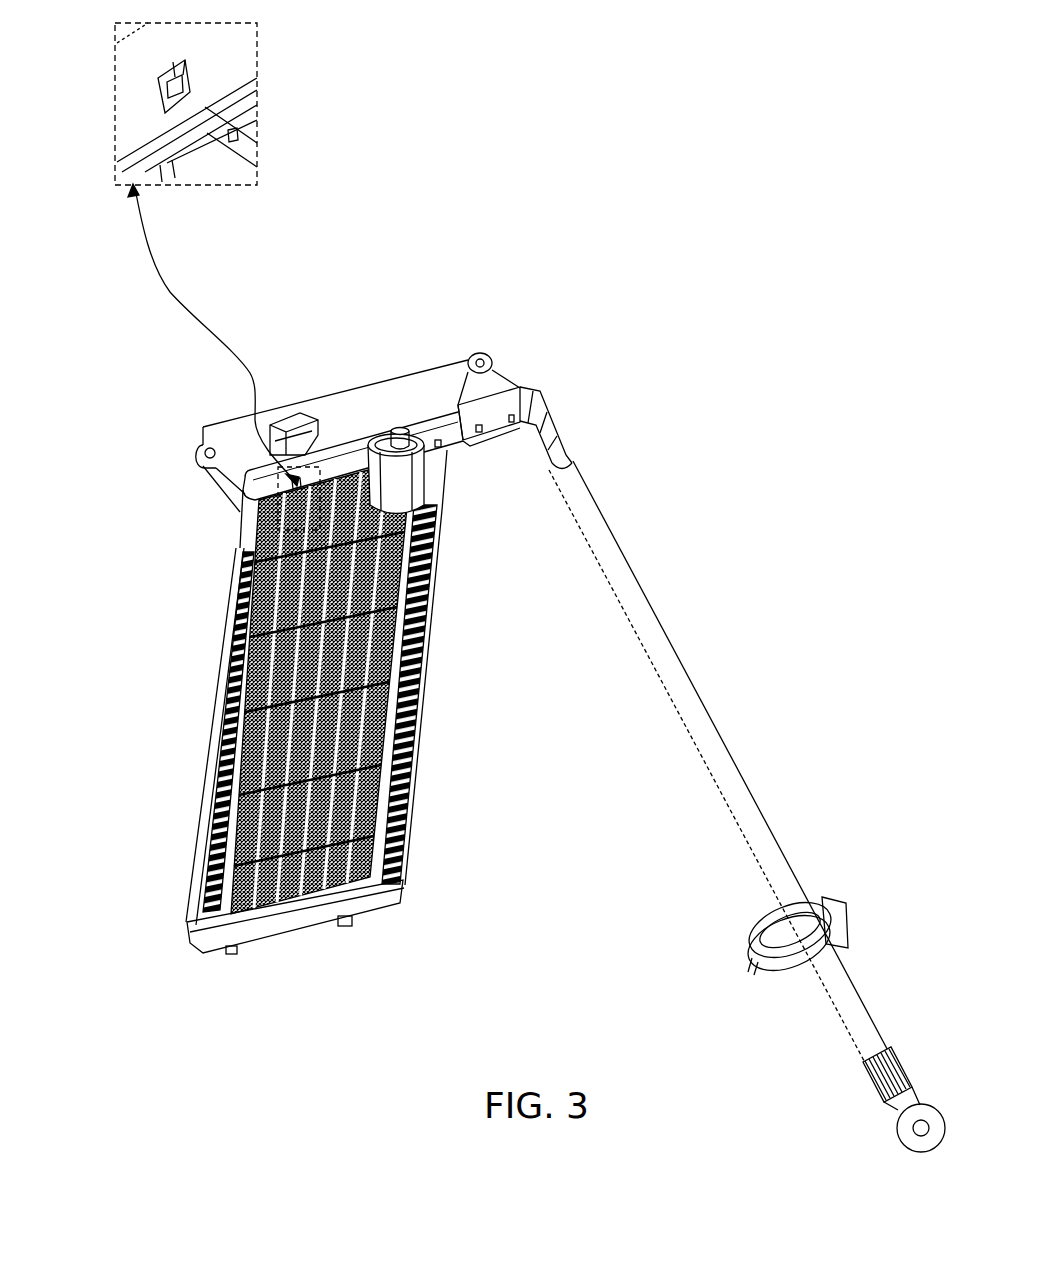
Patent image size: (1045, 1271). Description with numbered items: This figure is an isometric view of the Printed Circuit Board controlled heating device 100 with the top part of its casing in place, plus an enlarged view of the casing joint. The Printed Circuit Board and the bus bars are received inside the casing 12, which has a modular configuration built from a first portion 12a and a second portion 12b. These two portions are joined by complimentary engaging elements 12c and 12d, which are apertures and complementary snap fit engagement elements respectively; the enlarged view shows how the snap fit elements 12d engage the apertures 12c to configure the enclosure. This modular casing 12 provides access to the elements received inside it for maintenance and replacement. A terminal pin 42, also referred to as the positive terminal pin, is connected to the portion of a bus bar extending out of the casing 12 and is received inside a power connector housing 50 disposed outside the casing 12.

The Printed Circuit Board (PCB) controlled heating device 100 is at (707, 308).
The Printed Circuit Board (PCB) casing 12 is at (360, 397).
The first portion 12a is at (482, 383).
The second portion 12b is at (468, 446).
The complimentary engaging element 12c is at (295, 482).
The complimentary engaging element 12d is at (300, 460).
The terminal pin 42 is at (402, 428).
The power connector housing 50 is at (428, 483).